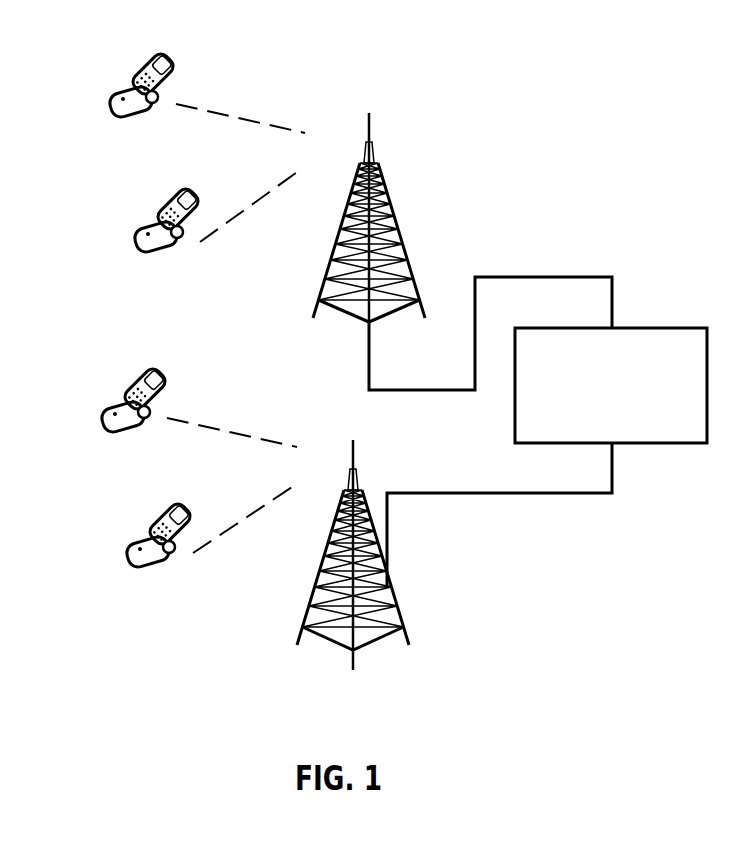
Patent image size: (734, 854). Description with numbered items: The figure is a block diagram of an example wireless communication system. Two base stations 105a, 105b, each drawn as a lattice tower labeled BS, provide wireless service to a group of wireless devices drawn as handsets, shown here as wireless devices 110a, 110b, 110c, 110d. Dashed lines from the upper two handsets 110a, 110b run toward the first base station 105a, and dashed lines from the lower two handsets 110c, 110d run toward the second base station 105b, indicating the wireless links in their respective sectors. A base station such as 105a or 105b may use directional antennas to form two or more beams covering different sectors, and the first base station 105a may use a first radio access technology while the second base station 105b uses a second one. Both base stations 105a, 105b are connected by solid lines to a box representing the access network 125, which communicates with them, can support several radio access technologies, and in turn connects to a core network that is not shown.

The base station 105a is at (389, 189).
The base station 105b is at (361, 474).
The wireless device 110a is at (123, 55).
The wireless device 110b is at (150, 190).
The wireless device 110c is at (116, 369).
The wireless device 110d is at (143, 504).
The access network 125 is at (527, 326).